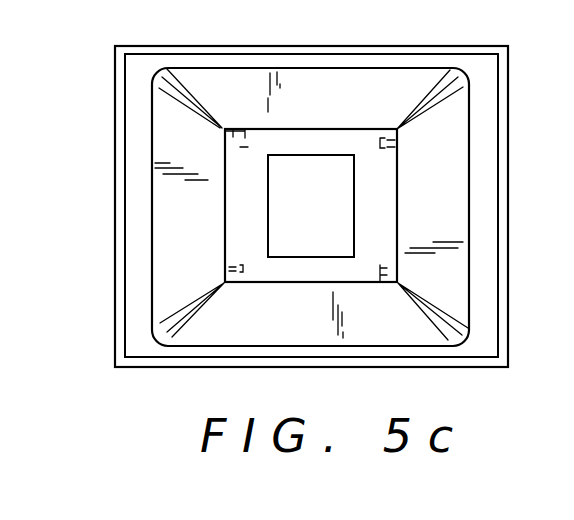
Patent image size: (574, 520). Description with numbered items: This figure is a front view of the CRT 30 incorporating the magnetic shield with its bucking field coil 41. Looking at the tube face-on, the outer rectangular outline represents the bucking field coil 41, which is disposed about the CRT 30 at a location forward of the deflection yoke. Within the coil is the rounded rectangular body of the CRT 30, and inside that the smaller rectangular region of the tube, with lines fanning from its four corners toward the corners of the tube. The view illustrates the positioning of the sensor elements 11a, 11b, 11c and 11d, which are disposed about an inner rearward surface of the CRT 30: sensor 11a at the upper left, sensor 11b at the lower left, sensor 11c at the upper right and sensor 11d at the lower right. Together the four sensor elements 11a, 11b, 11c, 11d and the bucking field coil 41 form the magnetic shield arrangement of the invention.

The sensor 11a is at (224, 139).
The sensor 11b is at (216, 270).
The sensor element 11c is at (384, 130).
The sensor element 11d is at (350, 283).
The CRT 30 is at (122, 288).
The bucking field coil 41 is at (382, 47).